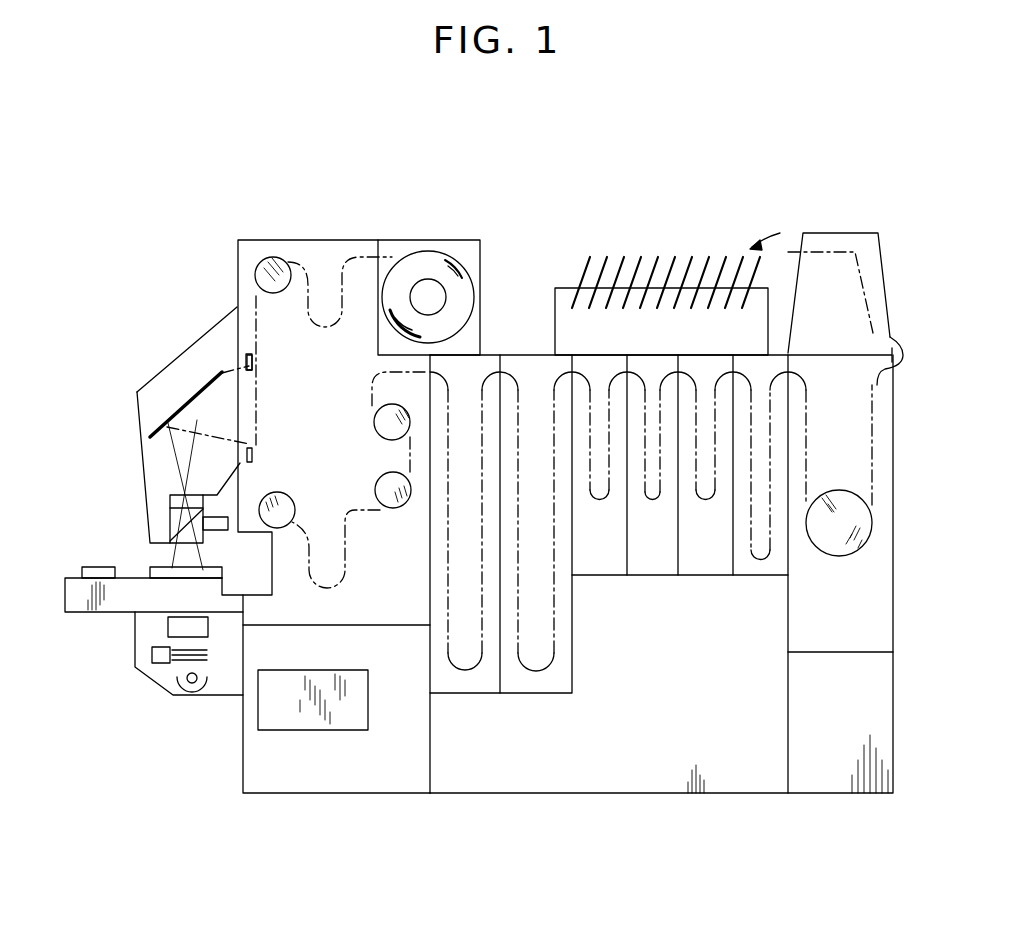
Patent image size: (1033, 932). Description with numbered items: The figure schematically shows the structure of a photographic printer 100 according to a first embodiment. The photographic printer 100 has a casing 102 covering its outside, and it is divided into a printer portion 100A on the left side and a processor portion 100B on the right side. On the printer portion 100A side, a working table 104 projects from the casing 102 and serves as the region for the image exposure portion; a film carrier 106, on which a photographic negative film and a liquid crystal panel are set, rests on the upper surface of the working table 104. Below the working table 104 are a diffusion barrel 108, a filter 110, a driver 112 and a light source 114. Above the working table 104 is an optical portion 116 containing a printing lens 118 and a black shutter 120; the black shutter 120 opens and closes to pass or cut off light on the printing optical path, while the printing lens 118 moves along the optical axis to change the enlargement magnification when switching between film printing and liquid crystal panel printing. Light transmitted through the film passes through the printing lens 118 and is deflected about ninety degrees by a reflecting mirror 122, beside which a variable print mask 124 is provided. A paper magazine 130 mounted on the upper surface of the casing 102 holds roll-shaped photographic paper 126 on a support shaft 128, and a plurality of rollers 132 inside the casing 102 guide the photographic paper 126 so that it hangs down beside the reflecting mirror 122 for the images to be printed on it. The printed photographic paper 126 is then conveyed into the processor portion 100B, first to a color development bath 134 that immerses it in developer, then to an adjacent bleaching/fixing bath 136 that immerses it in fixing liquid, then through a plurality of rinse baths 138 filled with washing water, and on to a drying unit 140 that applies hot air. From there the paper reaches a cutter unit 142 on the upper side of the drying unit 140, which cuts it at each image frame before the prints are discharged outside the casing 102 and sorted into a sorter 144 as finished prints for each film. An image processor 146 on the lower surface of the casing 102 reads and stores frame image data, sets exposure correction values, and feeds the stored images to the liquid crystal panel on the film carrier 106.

The photographic printer 100 is at (530, 192).
The printer portion 100A is at (423, 827).
The processor portion 100B is at (889, 827).
The casing 102 is at (330, 240).
The working table 104 is at (68, 596).
The film carrier 106 is at (153, 565).
The diffusion barrel 108 is at (165, 625).
The filter 110 is at (215, 644).
The driver 112 is at (160, 665).
The light source 114 is at (185, 683).
The optical portion 116 is at (138, 445).
The printing lens 118 is at (150, 503).
The black shutter 120 is at (199, 519).
The reflecting mirror 122 is at (185, 402).
The variable print mask 124 is at (247, 352).
The photographic paper 126 is at (258, 395).
The support shaft 128 is at (420, 285).
The paper magazine 130 is at (442, 240).
The rollers 132 is at (268, 258).
The color development bath 134 is at (470, 693).
The bleaching/fixing bath 136 is at (530, 693).
The rinse baths 138 is at (594, 576).
The drying unit 140 is at (827, 607).
The cutter unit 142 is at (886, 280).
The sorter 144 is at (565, 288).
The image processor 146 is at (335, 717).